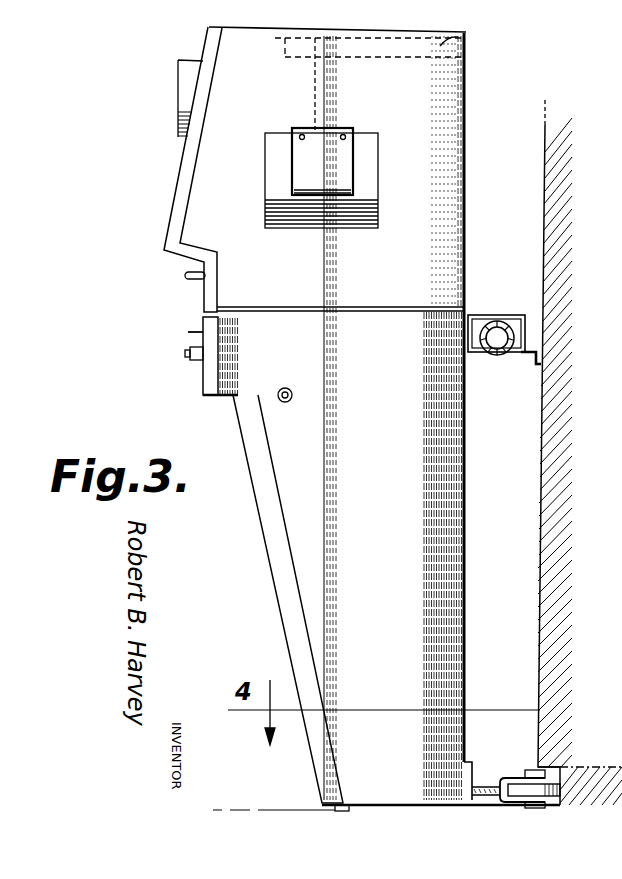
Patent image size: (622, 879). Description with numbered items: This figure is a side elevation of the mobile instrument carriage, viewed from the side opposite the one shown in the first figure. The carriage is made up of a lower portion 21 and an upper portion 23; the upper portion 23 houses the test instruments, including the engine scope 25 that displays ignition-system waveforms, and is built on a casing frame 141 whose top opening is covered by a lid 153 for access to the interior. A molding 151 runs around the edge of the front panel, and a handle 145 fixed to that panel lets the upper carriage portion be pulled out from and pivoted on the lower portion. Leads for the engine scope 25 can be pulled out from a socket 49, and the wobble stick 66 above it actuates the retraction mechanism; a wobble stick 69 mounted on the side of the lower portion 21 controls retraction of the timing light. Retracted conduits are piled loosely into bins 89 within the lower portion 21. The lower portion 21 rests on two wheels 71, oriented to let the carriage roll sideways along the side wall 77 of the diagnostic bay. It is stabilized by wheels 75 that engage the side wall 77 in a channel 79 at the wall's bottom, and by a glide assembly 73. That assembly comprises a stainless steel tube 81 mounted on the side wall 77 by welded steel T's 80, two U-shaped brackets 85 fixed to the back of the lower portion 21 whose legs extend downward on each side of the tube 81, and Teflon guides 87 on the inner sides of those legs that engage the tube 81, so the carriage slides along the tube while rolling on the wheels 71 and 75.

The lower portion 21 is at (302, 552).
The upper portion 23 is at (200, 205).
The engine scope 25 is at (178, 74).
The socket 49 is at (190, 357).
The wobble stick 66 is at (188, 332).
The wobble stick 69 is at (290, 388).
The wheels 71 is at (345, 811).
The glide assembly 73 is at (488, 306).
The wheels 75 is at (520, 778).
The side wall 77 is at (545, 160).
The channel 79 is at (560, 770).
The steel T's 80 is at (528, 362).
The stainless steel tube 81 is at (493, 356).
The U-shaped brackets 85 is at (500, 318).
The Teflon guides 87 is at (472, 345).
The bins 89 is at (599, 232).
The casing frame 141 is at (450, 99).
The handle 145 is at (185, 275).
The molding 151 is at (184, 165).
The lid 153 is at (468, 37).